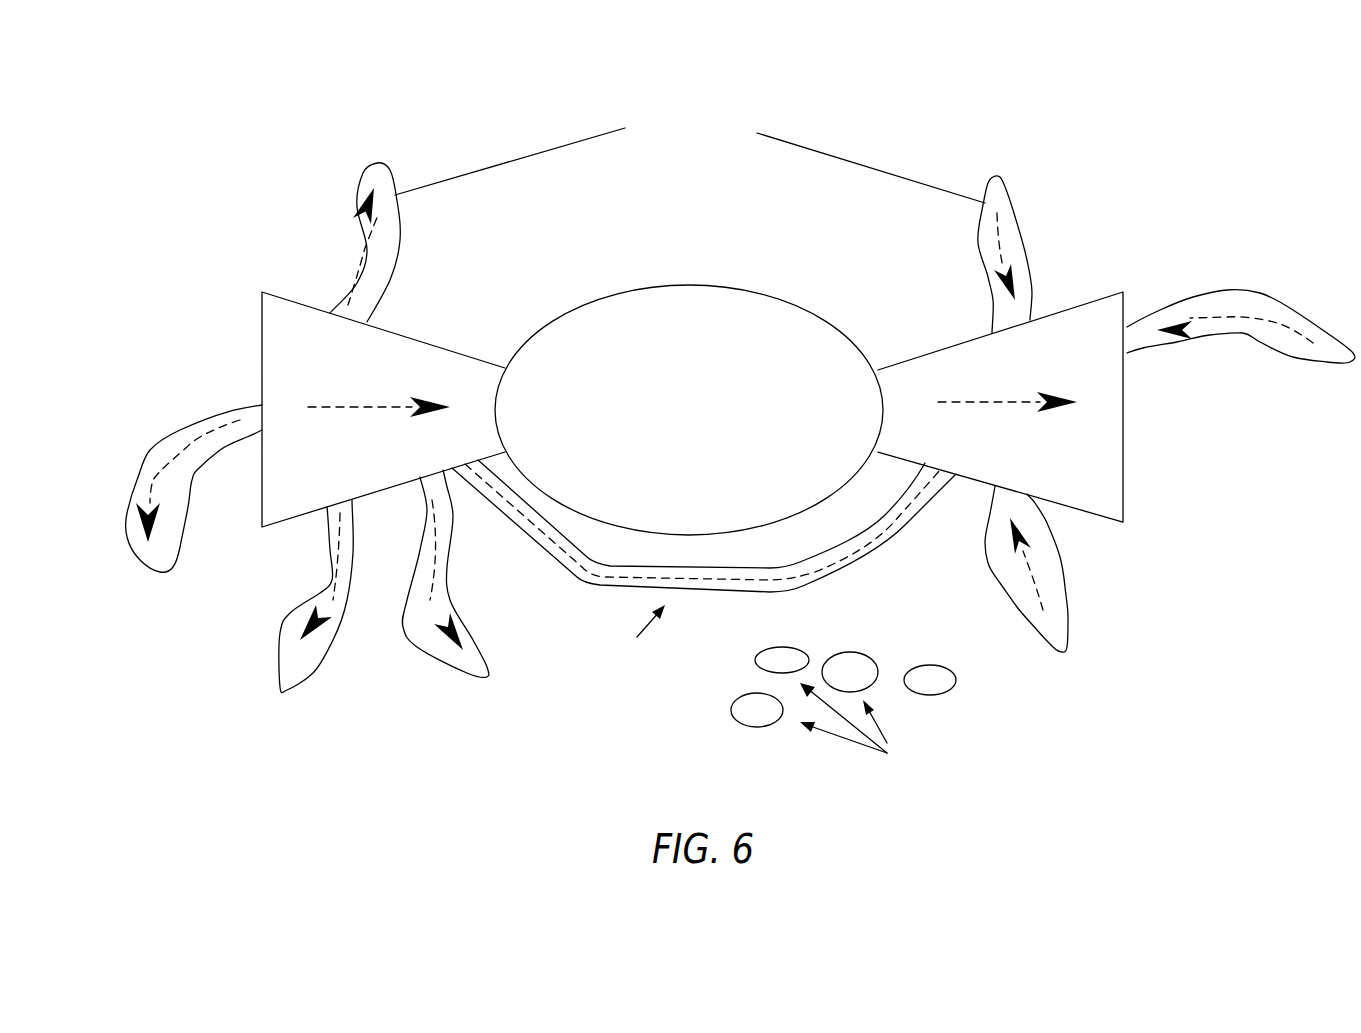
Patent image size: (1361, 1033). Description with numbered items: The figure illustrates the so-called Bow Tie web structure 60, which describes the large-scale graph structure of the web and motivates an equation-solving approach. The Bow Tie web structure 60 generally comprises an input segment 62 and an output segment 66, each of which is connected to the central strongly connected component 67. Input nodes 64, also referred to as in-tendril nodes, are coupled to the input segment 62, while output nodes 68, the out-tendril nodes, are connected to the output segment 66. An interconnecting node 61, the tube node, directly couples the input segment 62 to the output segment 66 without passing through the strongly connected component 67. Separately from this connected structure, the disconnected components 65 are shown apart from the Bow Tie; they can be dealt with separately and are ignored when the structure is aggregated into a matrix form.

The Bow Tie web structure 60 is at (792, 53).
The interconnecting node 61 is at (572, 578).
The input segment 62 is at (262, 340).
The input nodes 64 is at (357, 210).
The disconnected components 65 is at (957, 673).
The output segment 66 is at (1125, 487).
The strongly connected component 67 is at (705, 287).
The output nodes 68 is at (1017, 210).